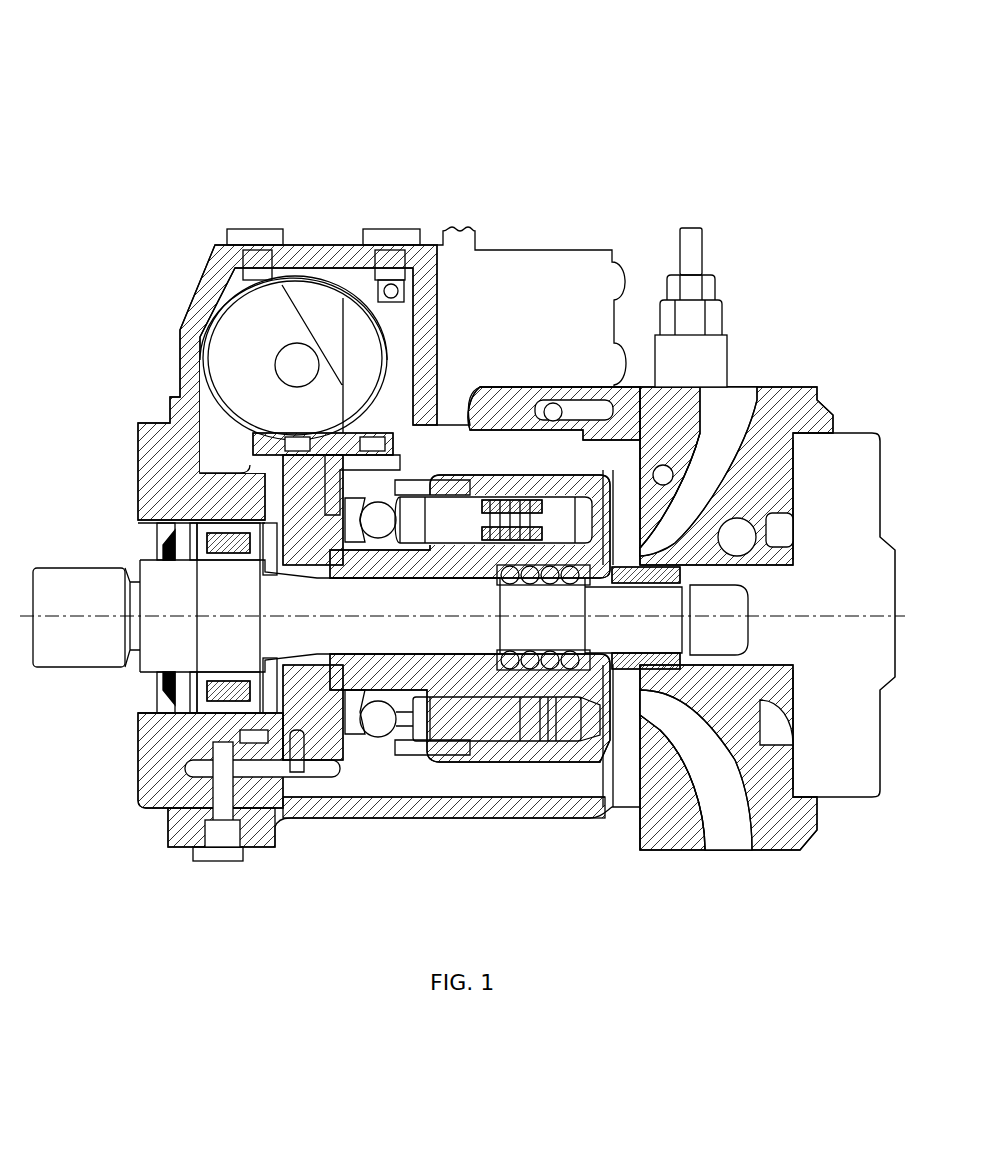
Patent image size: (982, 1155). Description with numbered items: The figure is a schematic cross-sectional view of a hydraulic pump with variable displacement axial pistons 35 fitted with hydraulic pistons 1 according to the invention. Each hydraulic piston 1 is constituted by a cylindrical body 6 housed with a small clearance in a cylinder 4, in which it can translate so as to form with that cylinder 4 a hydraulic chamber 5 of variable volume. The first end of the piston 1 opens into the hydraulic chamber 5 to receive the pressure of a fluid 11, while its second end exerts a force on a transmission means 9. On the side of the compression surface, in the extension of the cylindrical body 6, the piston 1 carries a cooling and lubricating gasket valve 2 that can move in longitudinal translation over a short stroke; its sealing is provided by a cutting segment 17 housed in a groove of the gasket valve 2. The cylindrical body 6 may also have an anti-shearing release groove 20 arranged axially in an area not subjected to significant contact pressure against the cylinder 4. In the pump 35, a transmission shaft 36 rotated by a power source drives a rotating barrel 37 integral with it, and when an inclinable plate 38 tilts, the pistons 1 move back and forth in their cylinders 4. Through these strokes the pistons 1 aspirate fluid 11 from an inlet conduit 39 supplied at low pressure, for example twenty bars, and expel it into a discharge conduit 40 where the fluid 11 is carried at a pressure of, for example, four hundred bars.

The hydraulic piston 1 is at (523, 470).
The cooling and lubricating gasket valve 2 is at (577, 520).
The cylinder 4 is at (590, 500).
The hydraulic chamber 5 is at (618, 505).
The cylindrical body 6 is at (473, 476).
The transmission means 9 is at (400, 492).
The fluid 11 is at (728, 455).
The cutting segment 17 is at (493, 735).
The anti-shearing release groove 20 is at (458, 735).
The hydraulic pump with variable displacement axial pistons 35 is at (268, 165).
The transmission shaft 36 is at (70, 595).
The rotating barrel 37 is at (612, 735).
The inclinable plate 38 is at (345, 764).
The inlet conduit 39 is at (740, 405).
The discharge conduit 40 is at (715, 832).